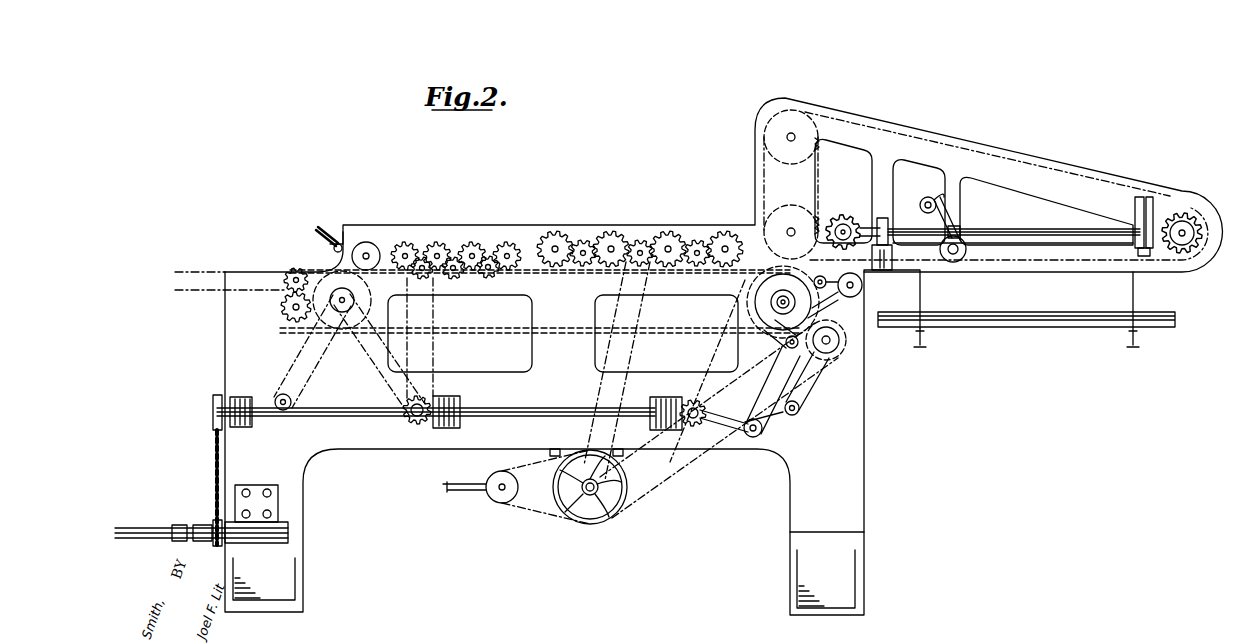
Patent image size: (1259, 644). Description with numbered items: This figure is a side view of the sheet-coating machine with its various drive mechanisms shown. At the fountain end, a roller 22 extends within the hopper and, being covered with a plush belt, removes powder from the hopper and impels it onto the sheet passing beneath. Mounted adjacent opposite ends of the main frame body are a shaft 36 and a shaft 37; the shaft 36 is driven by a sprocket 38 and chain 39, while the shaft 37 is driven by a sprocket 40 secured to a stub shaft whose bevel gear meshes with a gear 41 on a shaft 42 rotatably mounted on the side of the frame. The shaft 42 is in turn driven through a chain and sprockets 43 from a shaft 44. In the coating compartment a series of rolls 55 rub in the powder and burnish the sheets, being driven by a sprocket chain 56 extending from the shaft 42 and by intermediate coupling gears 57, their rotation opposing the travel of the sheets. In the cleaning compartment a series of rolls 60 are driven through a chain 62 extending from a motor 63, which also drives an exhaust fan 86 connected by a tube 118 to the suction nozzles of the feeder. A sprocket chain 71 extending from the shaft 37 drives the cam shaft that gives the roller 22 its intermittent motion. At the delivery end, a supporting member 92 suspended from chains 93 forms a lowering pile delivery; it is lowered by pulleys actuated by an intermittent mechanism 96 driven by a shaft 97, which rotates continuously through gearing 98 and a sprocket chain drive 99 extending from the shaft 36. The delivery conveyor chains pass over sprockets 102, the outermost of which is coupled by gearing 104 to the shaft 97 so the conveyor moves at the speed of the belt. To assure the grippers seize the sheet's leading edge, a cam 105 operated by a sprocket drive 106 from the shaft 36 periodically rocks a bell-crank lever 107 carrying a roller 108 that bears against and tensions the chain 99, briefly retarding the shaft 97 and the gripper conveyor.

The roller 22 is at (367, 242).
The shaft 36 is at (782, 302).
The shaft 37 is at (342, 302).
The sprocket 38 is at (757, 290).
The chain 39 is at (716, 347).
The sprocket 40 is at (702, 428).
The gear 41 is at (690, 425).
The shaft 42 is at (517, 407).
The chain and sprockets 43 is at (213, 452).
The shaft 44 is at (155, 526).
The rolls 55 is at (498, 240).
The sprocket chain 56 is at (433, 320).
The intermediate coupling gears 57 is at (490, 278).
The rolls 60 is at (724, 232).
The chain 62 is at (630, 362).
The motor 63 is at (595, 523).
The sprocket chain 71 is at (300, 355).
The exhaust fan 86 is at (498, 500).
The supporting member 92 is at (1028, 327).
The chains or cables 93 is at (1135, 295).
The intermittent mechanism 96 is at (974, 228).
The shaft 97 is at (1037, 237).
The gearing 98 is at (853, 218).
The sprocket chain drive 99 is at (793, 265).
The sprockets 102 is at (818, 222).
The gearing 104 is at (1177, 213).
The cam 105 is at (830, 346).
The sprocket drive 106 is at (783, 335).
The bell-crank lever 107 is at (812, 308).
The roller 108 is at (826, 282).
The tube 118 is at (452, 488).